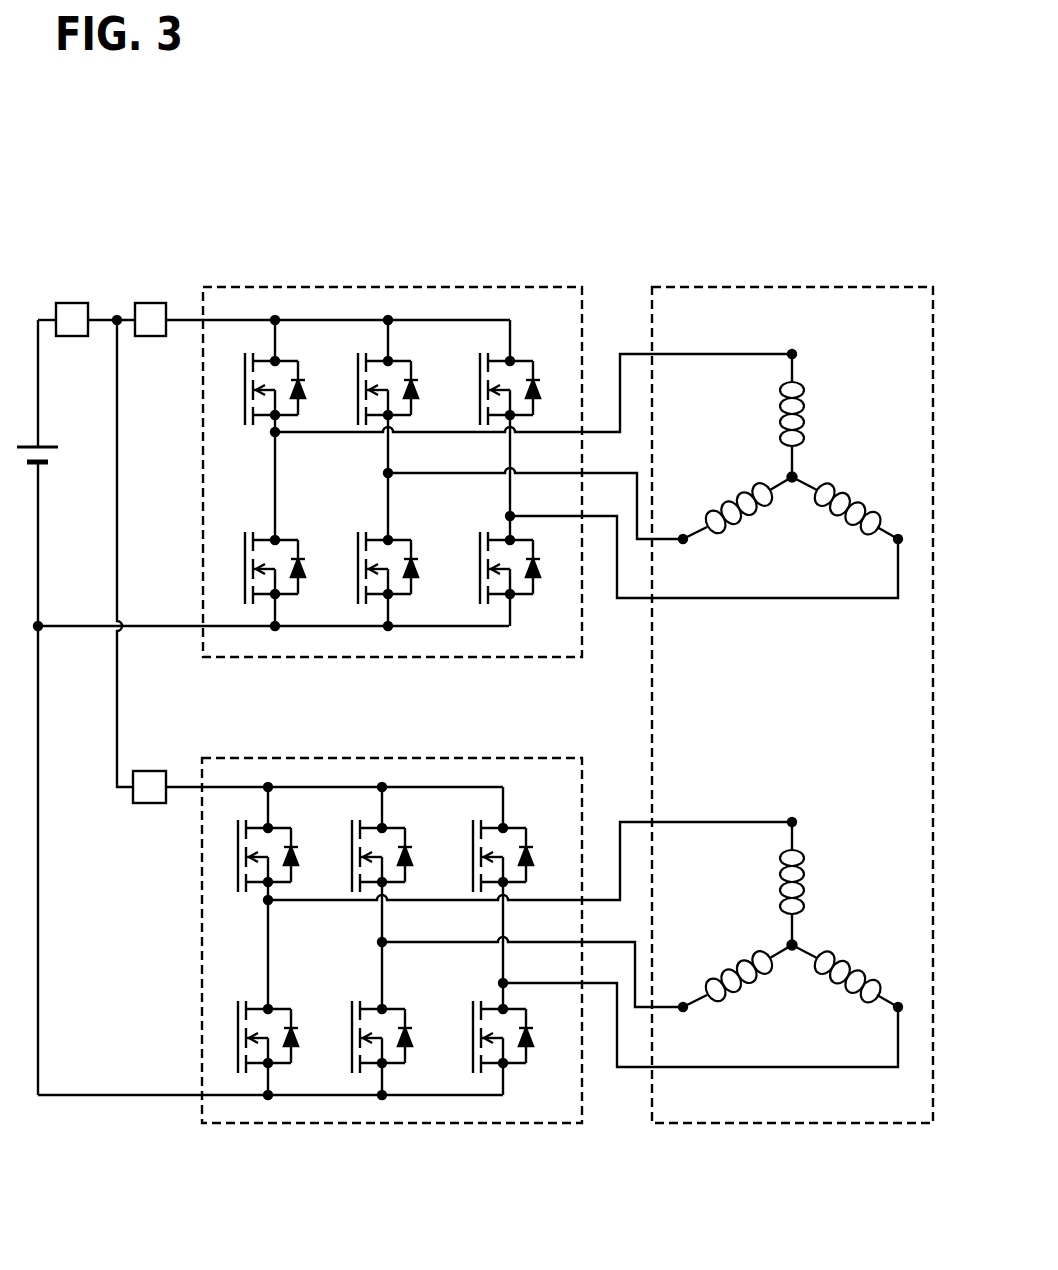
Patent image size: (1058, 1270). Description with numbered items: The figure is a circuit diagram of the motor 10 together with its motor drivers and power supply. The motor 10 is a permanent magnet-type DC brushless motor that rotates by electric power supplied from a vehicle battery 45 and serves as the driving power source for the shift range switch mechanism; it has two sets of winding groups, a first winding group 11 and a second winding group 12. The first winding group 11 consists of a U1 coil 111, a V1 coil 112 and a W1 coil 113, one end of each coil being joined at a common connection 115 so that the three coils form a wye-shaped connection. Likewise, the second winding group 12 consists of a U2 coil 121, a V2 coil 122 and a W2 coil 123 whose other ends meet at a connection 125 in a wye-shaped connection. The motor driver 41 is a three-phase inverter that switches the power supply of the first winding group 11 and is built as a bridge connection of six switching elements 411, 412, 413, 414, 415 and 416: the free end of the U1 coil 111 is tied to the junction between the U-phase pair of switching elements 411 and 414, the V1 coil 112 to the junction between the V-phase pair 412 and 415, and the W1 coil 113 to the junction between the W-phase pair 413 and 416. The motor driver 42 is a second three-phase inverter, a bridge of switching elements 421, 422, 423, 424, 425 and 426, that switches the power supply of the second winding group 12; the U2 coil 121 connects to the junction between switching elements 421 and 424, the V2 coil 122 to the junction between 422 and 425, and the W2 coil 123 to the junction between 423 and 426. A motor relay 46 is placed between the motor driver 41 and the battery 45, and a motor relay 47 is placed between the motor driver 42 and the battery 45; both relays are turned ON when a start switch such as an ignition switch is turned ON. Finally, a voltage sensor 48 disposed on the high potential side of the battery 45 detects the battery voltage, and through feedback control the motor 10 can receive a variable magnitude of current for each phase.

The motor 10 is at (697, 287).
The first winding group 11 is at (790, 443).
The second winding group 12 is at (790, 916).
The U1 coil 111 is at (806, 409).
The V1 coil 112 is at (740, 488).
The W1 coil 113 is at (846, 488).
The connection 115 is at (792, 483).
The U2 coil 121 is at (806, 878).
The V2 coil 122 is at (740, 956).
The W2 coil 123 is at (846, 956).
The connection 125 is at (792, 951).
The motor driver 41 is at (235, 287).
The motor driver 42 is at (234, 758).
The switching element 411 is at (283, 361).
The switching element 412 is at (395, 361).
The switching element 413 is at (518, 359).
The switching element 414 is at (283, 540).
The switching element 415 is at (395, 540).
The switching element 416 is at (534, 588).
The switching element 421 is at (276, 828).
The switching element 422 is at (389, 828).
The switching element 423 is at (512, 826).
The switching element 424 is at (277, 1009).
The switching element 425 is at (389, 1009).
The switching element 426 is at (527, 1057).
The battery 45 is at (48, 445).
The motor relay 46 is at (142, 303).
The motor relay 47 is at (142, 771).
The voltage sensor 48 is at (64, 303).